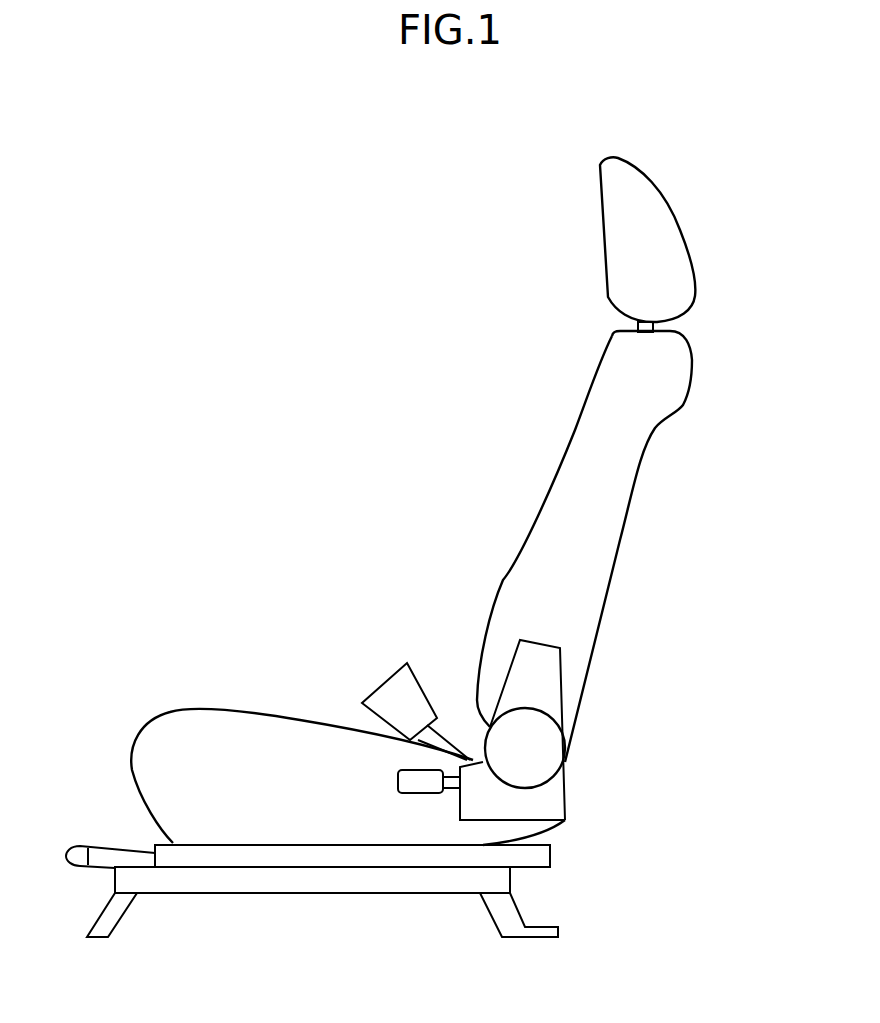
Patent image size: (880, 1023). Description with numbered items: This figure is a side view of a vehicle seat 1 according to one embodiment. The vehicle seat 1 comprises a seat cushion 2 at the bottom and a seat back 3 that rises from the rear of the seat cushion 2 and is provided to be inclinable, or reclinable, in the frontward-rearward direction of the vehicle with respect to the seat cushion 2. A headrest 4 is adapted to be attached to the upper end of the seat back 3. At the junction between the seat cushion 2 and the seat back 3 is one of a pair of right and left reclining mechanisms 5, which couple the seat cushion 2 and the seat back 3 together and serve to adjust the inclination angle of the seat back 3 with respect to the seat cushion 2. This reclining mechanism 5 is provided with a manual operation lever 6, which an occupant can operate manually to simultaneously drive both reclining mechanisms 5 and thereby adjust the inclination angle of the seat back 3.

The vehicle seat 1 is at (418, 226).
The seat cushion 2 is at (290, 813).
The seat back 3 is at (597, 558).
The headrest 4 is at (660, 216).
The reclining mechanism 5 is at (573, 768).
The manual operation lever 6 is at (422, 782).